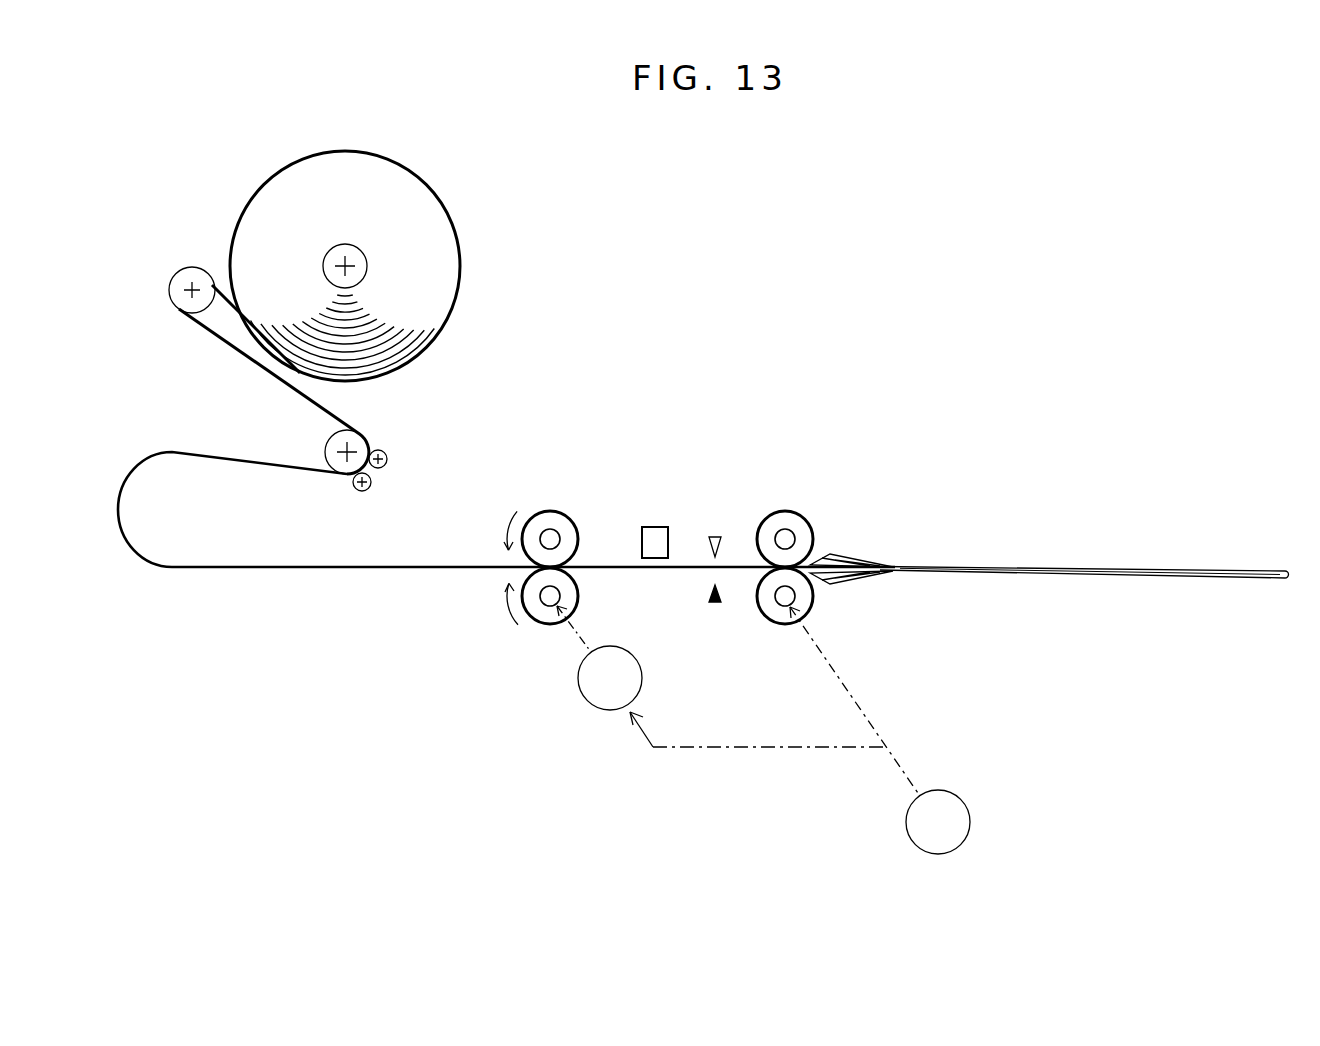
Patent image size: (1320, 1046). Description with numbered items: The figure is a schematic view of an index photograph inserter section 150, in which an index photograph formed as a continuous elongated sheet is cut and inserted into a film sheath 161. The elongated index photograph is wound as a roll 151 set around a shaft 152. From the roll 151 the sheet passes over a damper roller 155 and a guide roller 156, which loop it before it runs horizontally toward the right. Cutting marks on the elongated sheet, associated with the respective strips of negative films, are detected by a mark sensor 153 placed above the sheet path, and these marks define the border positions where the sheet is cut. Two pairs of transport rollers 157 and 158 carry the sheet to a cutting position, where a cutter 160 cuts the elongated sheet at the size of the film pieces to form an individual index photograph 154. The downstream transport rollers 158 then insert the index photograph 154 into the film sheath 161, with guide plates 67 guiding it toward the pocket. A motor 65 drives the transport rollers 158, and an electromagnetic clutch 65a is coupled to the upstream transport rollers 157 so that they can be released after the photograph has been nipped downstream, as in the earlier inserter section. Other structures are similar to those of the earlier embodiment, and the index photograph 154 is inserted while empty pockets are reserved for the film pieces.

The index photograph inserter section 150 is at (718, 408).
The roll 151 is at (345, 158).
The shaft 152 is at (345, 244).
The mark sensor 153 is at (655, 534).
The index photograph 154 is at (1091, 571).
The damper roller 155 is at (192, 268).
The guide roller 156 is at (358, 441).
The transport rollers 157 is at (546, 621).
The transport rollers 158 is at (781, 622).
The cutter 160 is at (715, 536).
The film sheath 161 is at (975, 540).
The guide plates 67 is at (822, 556).
The motor 65 is at (938, 854).
The electromagnetic clutch 65a is at (611, 711).